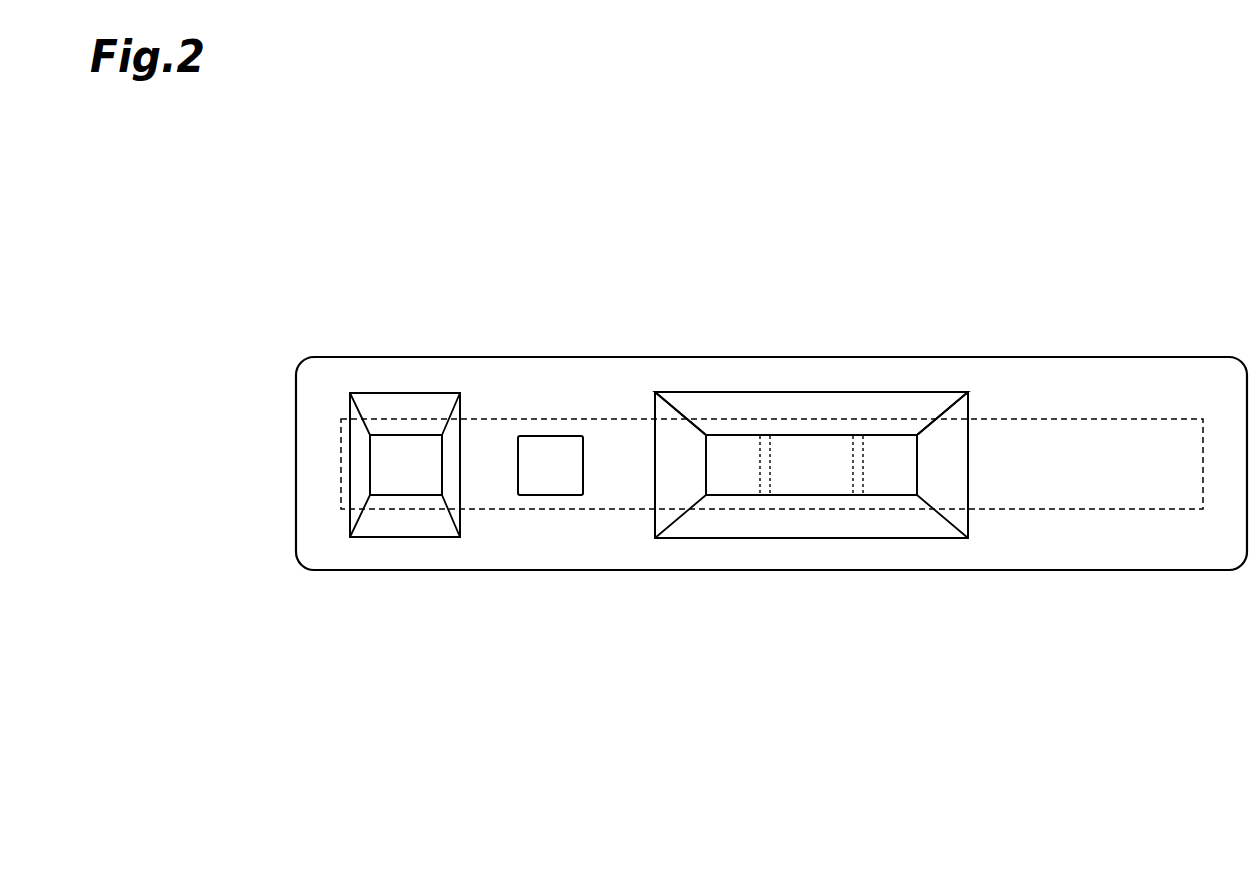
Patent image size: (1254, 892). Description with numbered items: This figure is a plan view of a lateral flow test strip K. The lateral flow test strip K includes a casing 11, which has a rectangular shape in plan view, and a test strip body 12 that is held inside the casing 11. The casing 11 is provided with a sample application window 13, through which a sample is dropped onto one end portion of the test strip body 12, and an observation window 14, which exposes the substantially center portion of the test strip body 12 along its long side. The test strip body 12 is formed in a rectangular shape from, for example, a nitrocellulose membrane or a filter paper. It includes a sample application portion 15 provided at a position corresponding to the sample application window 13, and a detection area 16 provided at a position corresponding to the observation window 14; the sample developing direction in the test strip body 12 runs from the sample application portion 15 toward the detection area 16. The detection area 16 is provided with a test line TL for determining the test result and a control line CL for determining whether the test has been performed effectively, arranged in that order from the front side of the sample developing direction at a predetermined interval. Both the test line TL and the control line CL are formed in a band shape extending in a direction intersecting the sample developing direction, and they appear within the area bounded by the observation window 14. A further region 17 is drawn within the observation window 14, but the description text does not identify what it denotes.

The lateral flow test strip K is at (297, 279).
The casing 11 is at (295, 431).
The test strip body 12 is at (1102, 417).
The sample application window 13 is at (427, 396).
The observation window 14 is at (828, 396).
The sample application portion 15 is at (404, 477).
The detection area 16 is at (892, 431).
The bottom surface of second component 17 is at (733, 447).
The test line TL is at (766, 496).
The control line CL is at (860, 496).